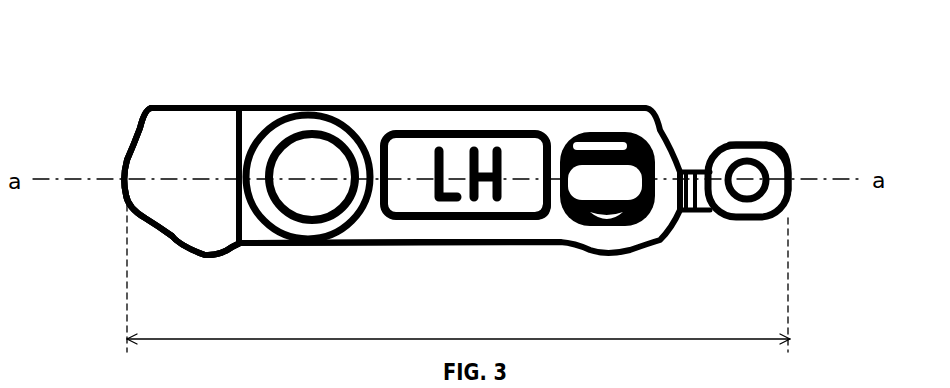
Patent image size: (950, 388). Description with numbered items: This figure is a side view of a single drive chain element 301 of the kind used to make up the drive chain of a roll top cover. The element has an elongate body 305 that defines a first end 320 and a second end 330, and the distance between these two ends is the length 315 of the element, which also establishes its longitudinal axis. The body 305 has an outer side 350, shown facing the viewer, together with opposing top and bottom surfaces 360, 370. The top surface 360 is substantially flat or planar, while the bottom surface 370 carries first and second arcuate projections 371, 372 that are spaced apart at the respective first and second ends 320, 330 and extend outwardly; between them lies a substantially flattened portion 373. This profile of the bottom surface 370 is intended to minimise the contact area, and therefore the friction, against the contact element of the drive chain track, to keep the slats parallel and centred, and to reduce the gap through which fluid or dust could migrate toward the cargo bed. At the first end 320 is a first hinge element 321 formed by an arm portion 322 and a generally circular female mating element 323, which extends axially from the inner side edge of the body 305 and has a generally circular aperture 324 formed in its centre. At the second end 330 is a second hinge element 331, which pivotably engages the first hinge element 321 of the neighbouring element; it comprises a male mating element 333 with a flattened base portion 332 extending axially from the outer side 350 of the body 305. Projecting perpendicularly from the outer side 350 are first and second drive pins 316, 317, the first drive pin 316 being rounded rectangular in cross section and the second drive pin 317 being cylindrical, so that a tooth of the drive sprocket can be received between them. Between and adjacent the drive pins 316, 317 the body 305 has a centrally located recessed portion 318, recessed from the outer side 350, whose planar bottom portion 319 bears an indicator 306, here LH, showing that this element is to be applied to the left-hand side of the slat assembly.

The drive chain element 301 is at (794, 47).
The elongate body 305 is at (567, 107).
The indicator 306 is at (468, 150).
The length 315 is at (370, 340).
The first drive pin 316 is at (583, 232).
The second drive pin 317 is at (307, 203).
The recessed portion 318 is at (523, 222).
The bottom portion 319 is at (524, 150).
The first end 320 is at (660, 125).
The first hinge element 321 is at (744, 143).
The arm portion 322 is at (699, 206).
The female mating element 323 is at (780, 158).
The aperture 324 is at (760, 162).
The second end 330 is at (170, 108).
The second hinge element 331 is at (158, 165).
The base portion 332 is at (133, 152).
The male mating element 333 is at (163, 205).
The outer side 350 is at (217, 132).
The top surface 360 is at (388, 107).
The bottom surface 370 is at (452, 244).
The first arcuate projection 371 is at (613, 247).
The second arcuate projection 372 is at (217, 258).
The flattened portion 373 is at (392, 246).